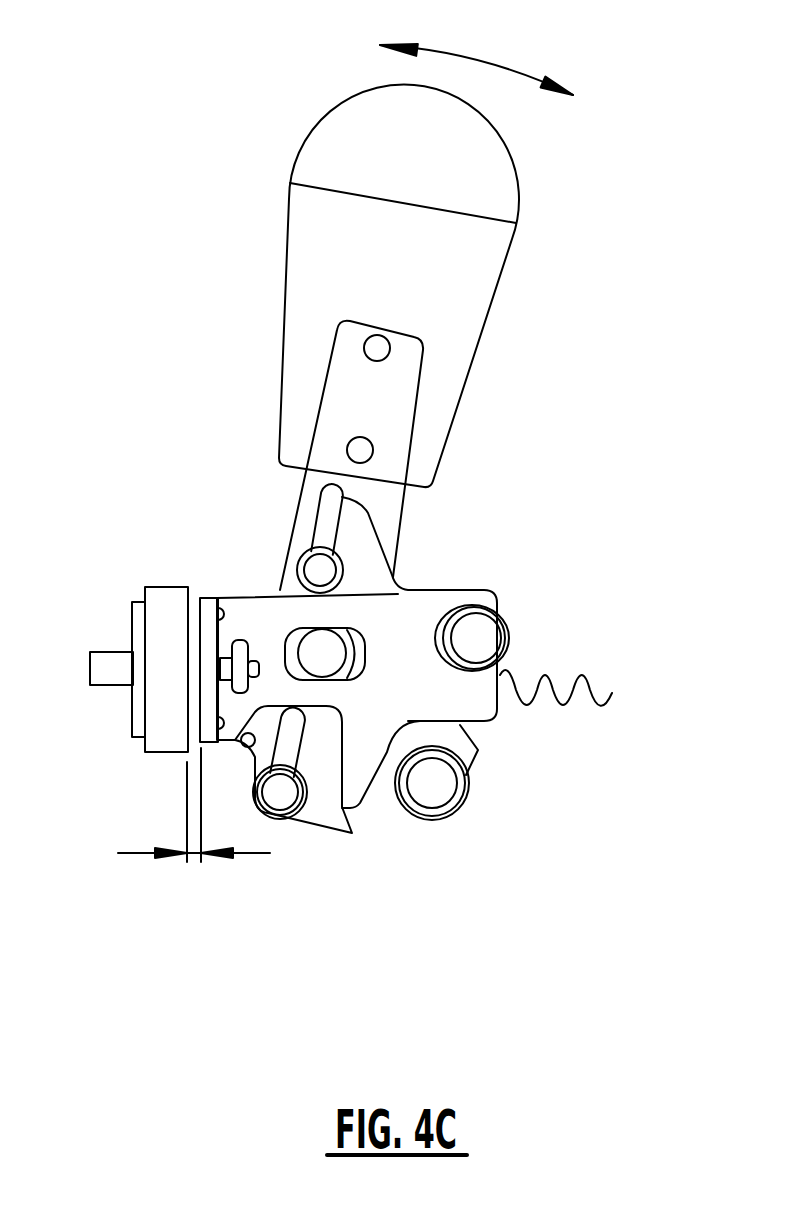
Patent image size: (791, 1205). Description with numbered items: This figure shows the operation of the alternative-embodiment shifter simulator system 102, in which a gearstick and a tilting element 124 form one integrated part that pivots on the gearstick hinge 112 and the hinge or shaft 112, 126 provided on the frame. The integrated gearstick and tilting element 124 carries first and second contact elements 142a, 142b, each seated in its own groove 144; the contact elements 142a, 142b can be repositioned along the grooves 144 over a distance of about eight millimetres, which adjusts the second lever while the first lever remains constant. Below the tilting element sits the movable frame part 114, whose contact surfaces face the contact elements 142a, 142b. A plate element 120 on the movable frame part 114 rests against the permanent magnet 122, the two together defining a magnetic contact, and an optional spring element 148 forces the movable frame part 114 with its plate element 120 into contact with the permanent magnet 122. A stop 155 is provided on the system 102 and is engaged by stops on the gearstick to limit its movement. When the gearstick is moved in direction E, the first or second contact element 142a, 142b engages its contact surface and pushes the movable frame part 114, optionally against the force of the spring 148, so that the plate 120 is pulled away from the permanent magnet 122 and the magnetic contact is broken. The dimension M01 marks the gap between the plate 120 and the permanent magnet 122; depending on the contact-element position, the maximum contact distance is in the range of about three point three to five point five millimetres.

The shifter simulator system 102 is at (273, 150).
The gearstick hinge 112 is at (242, 575).
The movable frame part 114 is at (447, 600).
The plate element 120 is at (208, 607).
The permanent magnet 122 is at (162, 639).
The tilting element 124 is at (300, 816).
The hinge or shaft 126 is at (318, 650).
The first contact element 142a is at (279, 797).
The second contact element 142b is at (322, 570).
The groove 144 is at (332, 508).
The spring element 148 is at (548, 672).
The stop 155 is at (437, 790).
The gap dimension M01 is at (194, 821).
The direction E is at (476, 58).